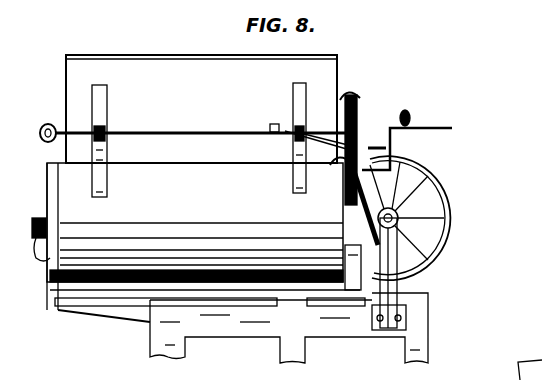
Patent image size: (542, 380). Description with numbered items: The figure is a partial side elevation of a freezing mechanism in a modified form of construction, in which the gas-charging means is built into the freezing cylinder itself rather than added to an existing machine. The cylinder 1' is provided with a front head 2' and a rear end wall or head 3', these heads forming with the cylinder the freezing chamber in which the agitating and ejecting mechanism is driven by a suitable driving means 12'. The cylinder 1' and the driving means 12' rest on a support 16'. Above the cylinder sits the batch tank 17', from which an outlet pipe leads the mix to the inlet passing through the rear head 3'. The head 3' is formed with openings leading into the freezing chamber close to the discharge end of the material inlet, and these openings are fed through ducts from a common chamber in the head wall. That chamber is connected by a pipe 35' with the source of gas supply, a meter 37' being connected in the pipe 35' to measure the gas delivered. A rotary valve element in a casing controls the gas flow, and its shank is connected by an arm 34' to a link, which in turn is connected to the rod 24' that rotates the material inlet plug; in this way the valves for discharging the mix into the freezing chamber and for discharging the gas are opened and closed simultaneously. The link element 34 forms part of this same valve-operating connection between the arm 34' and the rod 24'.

The batch tank 17' is at (201, 115).
The rod 24' is at (196, 123).
The arm 34' is at (302, 162).
The link post 34 is at (341, 168).
The cylinder 1' is at (206, 242).
The front head 2' is at (58, 239).
The rear end wall or head 3' is at (329, 259).
The pipe 35' is at (407, 149).
The meter 37' is at (420, 109).
The driving means 12' is at (423, 218).
The support 16' is at (303, 290).